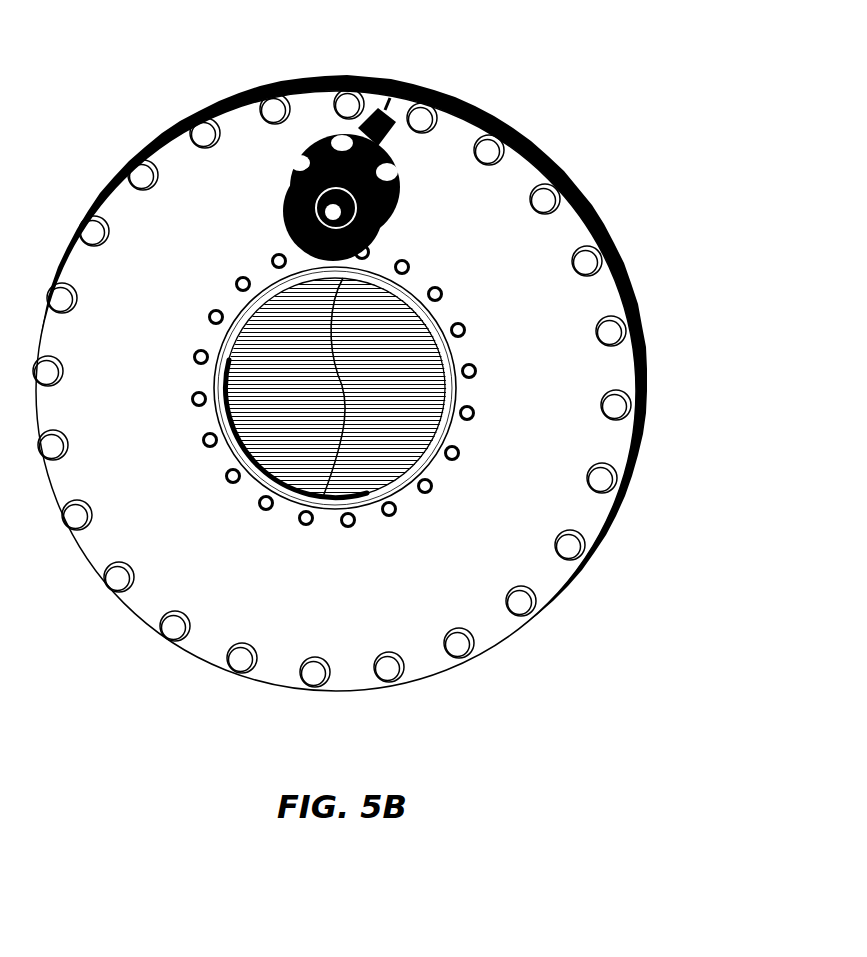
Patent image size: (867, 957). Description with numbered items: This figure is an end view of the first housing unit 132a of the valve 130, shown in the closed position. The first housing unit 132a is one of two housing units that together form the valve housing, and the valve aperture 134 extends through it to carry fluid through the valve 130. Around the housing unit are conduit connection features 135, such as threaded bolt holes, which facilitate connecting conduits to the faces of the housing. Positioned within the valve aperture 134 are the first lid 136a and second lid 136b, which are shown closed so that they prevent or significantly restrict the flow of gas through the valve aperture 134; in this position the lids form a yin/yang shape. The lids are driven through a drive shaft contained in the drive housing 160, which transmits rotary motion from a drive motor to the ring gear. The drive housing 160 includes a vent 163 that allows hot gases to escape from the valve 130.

The valve 130 is at (655, 160).
The first housing unit 132a is at (327, 94).
The valve aperture 134 is at (323, 500).
The conduit connection features 135 is at (390, 516).
The first lid 136a is at (423, 370).
The second lid 136b is at (293, 437).
The drive housing 160 is at (403, 187).
The vent 163 is at (391, 114).